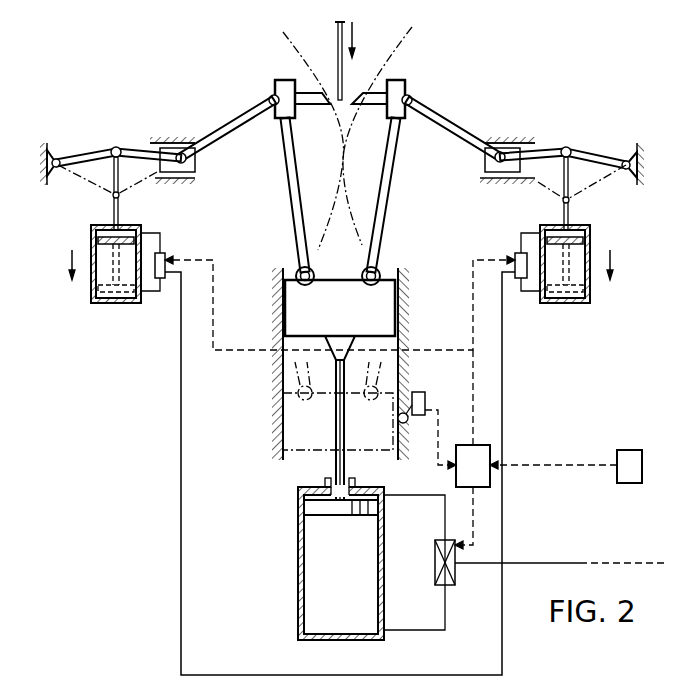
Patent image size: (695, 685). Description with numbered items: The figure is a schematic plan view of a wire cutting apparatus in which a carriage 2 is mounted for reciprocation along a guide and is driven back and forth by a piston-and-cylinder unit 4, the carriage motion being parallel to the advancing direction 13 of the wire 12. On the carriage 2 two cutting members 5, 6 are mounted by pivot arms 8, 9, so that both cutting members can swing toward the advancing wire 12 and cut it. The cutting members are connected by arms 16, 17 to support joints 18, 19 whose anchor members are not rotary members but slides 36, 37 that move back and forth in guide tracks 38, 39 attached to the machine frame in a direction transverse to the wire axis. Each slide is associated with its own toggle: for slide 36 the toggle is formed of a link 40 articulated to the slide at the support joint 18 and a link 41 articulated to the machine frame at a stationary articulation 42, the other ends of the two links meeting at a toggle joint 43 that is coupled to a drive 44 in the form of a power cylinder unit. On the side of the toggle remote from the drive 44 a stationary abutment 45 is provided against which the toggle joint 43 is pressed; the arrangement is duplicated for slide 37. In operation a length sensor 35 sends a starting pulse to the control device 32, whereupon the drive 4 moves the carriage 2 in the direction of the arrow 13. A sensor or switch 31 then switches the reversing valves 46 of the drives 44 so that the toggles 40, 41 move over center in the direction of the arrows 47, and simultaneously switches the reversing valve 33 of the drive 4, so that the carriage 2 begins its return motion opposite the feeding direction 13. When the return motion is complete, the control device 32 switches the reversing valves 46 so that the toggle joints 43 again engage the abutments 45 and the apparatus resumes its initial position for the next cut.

The carriage 2 is at (383, 313).
The piston-and-cylinder unit 4 is at (298, 590).
The cutting member 5 is at (284, 80).
The cutting member 6 is at (392, 80).
The pivot arm 8 is at (293, 155).
The pivot arm 9 is at (382, 155).
The wire 12 is at (336, 28).
The advancing direction 13 is at (354, 34).
The lever arm 16 is at (250, 112).
The lever arm 17 is at (448, 120).
The support joint 18 is at (181, 153).
The support joint 19 is at (500, 153).
The sensor or switch 31 is at (418, 392).
The control device 32 is at (456, 480).
The reversing valve 33 is at (449, 584).
The length sensor 35 is at (630, 483).
The slide 36 is at (185, 182).
The slide 37 is at (494, 182).
The guide track 38 is at (192, 146).
The guide track 39 is at (528, 143).
The link 40 is at (147, 153).
The link 41 is at (72, 158).
The stationary articulation 42 is at (57, 170).
The toggle joint 43 is at (112, 147).
The drive 44 is at (100, 303).
The stationary abutment 45 is at (120, 147).
The reversing valve 46 is at (165, 278).
The arrow 47 is at (70, 262).